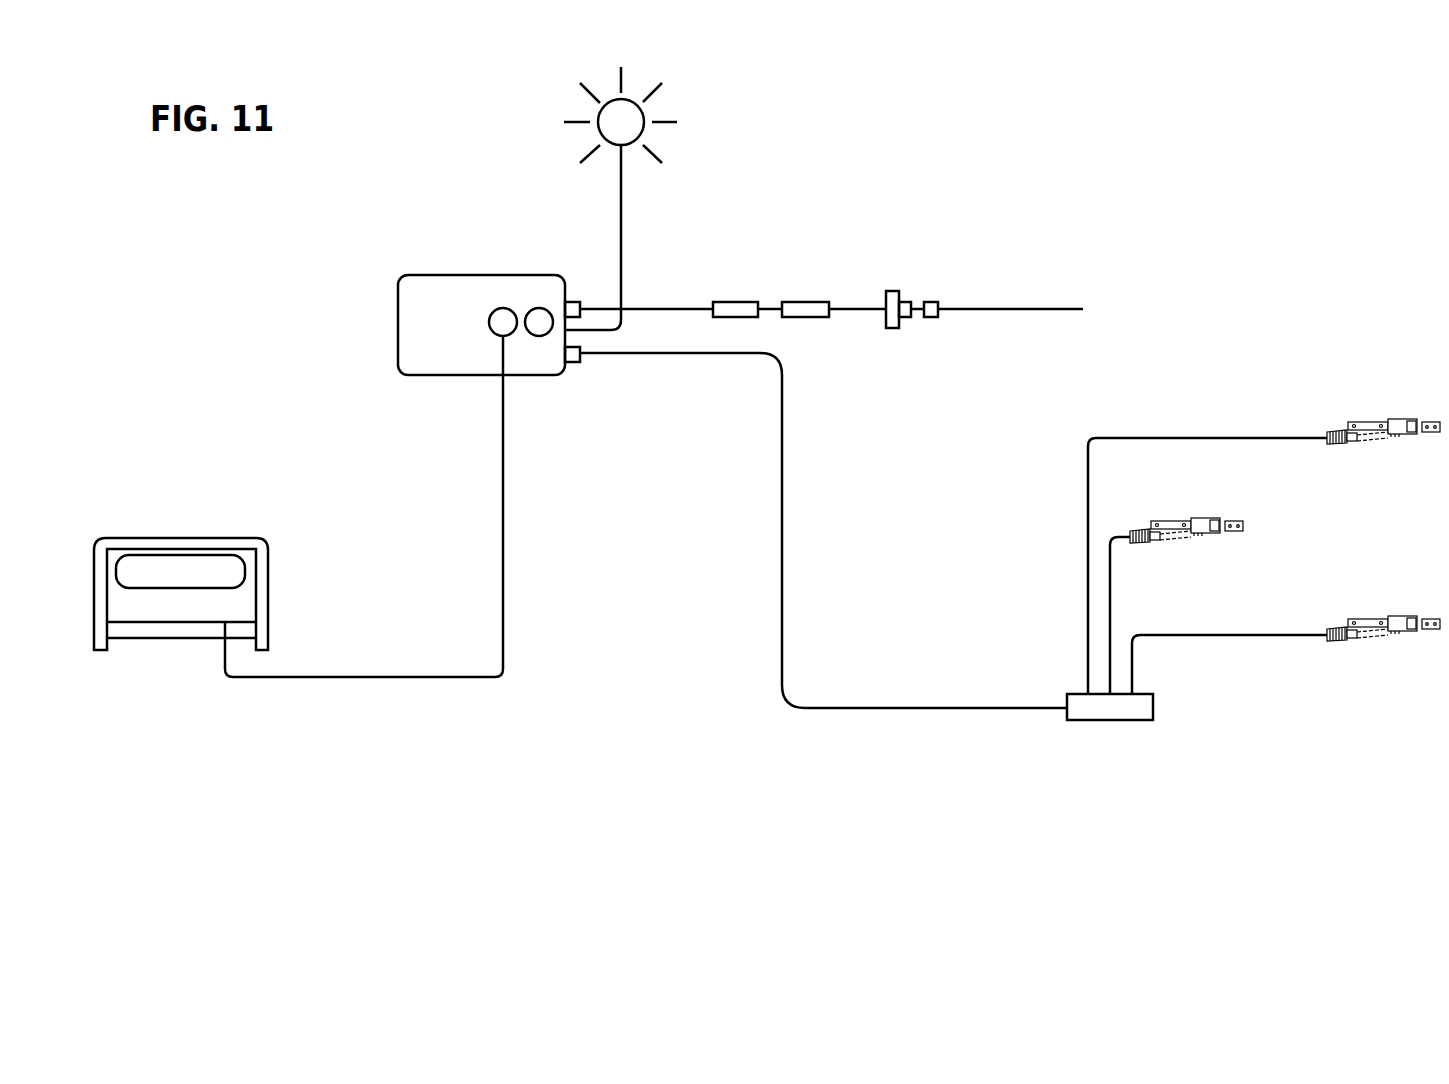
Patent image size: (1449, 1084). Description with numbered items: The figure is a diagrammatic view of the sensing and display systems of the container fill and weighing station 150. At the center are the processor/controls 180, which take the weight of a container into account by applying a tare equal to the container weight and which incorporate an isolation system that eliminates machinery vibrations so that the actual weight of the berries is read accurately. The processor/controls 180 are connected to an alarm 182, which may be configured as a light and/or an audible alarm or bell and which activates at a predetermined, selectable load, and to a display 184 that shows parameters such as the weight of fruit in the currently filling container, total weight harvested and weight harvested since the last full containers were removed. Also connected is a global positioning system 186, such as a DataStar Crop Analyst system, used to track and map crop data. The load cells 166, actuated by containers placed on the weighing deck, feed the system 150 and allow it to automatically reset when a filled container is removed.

The container fill and weighing station 150 is at (743, 767).
The load cells 166 is at (1370, 425).
The processor/controls 180 is at (433, 303).
The alarm 182 is at (625, 121).
The display 184 is at (218, 537).
The global positioning system 186 is at (1070, 295).